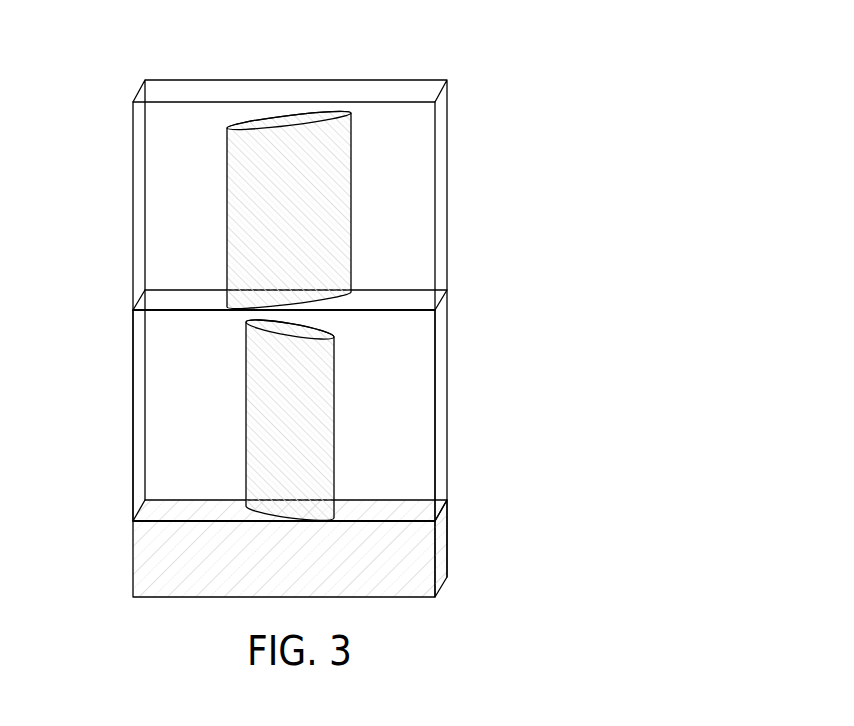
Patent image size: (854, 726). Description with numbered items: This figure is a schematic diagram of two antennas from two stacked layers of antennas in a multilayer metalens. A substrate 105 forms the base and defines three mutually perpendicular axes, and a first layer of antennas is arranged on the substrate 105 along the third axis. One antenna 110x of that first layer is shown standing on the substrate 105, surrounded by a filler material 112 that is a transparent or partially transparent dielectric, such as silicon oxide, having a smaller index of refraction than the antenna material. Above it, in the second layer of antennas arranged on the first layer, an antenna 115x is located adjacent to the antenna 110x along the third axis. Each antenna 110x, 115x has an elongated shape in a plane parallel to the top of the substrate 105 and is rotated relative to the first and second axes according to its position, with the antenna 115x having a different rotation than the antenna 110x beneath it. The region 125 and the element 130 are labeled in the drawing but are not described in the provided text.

The substrate 105 is at (405, 550).
The antenna 110x is at (305, 425).
The filler material 112 is at (133, 407).
The antenna 115x is at (323, 178).
The dielectric material 125 is at (404, 356).
The upper dielectric layer / structure 130 is at (133, 205).